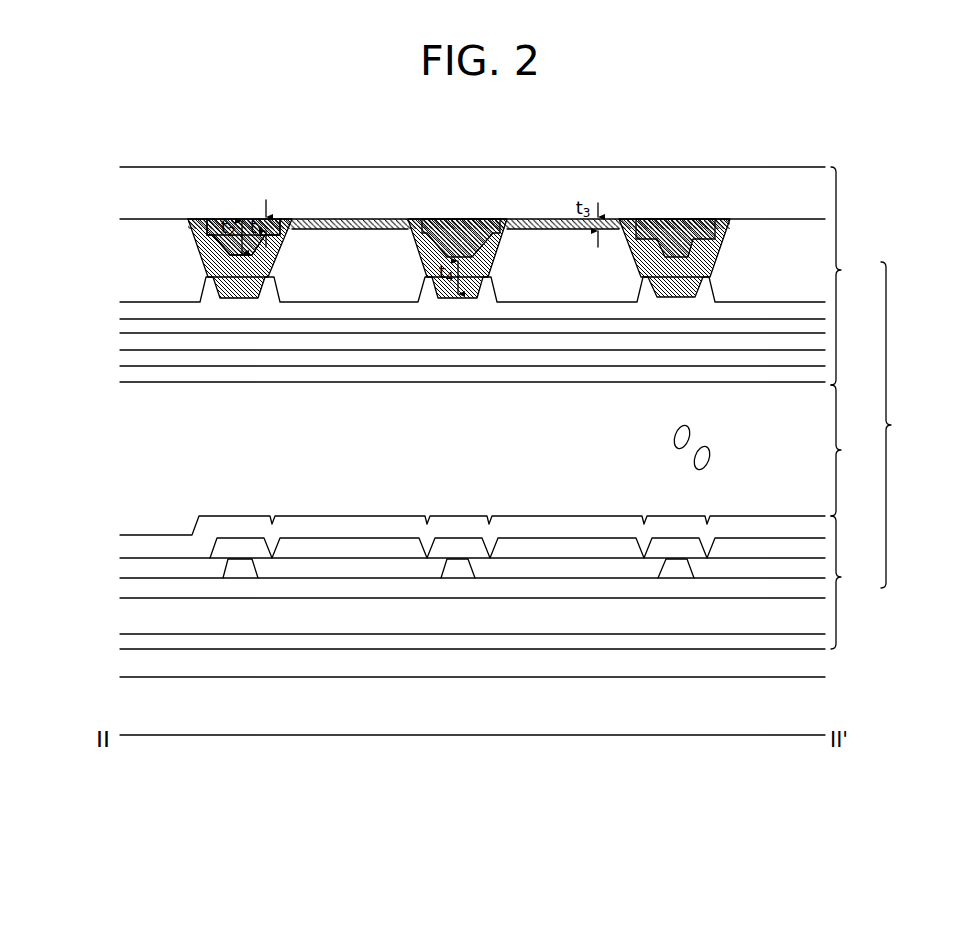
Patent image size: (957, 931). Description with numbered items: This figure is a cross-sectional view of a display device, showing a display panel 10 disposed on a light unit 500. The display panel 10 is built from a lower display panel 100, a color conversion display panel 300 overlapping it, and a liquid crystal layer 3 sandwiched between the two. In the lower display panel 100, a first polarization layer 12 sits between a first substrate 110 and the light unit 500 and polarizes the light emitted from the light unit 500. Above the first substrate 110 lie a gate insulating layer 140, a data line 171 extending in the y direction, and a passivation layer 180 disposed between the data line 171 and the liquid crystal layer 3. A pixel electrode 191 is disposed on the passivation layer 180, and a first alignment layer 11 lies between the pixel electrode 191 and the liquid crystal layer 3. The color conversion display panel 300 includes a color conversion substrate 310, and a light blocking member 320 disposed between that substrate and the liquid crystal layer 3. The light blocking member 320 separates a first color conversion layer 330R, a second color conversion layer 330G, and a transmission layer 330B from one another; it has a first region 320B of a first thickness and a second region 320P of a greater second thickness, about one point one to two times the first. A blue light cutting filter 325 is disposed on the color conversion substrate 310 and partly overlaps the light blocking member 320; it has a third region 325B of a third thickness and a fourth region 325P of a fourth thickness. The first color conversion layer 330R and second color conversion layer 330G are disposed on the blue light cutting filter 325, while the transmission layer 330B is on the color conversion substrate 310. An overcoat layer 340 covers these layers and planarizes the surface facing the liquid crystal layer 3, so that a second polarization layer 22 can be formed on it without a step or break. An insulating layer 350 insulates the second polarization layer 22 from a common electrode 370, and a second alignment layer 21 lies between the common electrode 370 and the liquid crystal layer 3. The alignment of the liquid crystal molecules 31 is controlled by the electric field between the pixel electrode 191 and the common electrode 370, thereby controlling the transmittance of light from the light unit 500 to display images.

The display panel 10 is at (898, 425).
The liquid crystal layer 3 is at (843, 450).
The liquid crystal molecules 31 is at (690, 432).
The lower display panel 100 is at (852, 582).
The color conversion display panel 300 is at (853, 276).
The color conversion substrate 310 is at (232, 192).
The light blocking member 320 is at (681, 193).
The second region 320P is at (673, 233).
The first region 320B is at (710, 225).
The blue light cutting filter 325 is at (461, 194).
The fourth region 325P is at (455, 232).
The third region 325B is at (500, 228).
The first color conversion layer 330R is at (305, 272).
The second color conversion layer 330G is at (605, 270).
The transmission layer 330B is at (790, 265).
The overcoat layer 340 is at (137, 313).
The second polarization layer 22 is at (140, 327).
The insulating layer 350 is at (138, 342).
The common electrode 370 is at (138, 357).
The second alignment layer 21 is at (133, 377).
The first alignment layer 11 is at (458, 524).
The pixel electrode 191 is at (402, 548).
The passivation layer 180 is at (303, 568).
The data line 171 is at (238, 568).
The gate insulating layer 140 is at (547, 586).
The first substrate 110 is at (630, 615).
The first polarization layer 12 is at (700, 640).
The light unit 500 is at (742, 723).